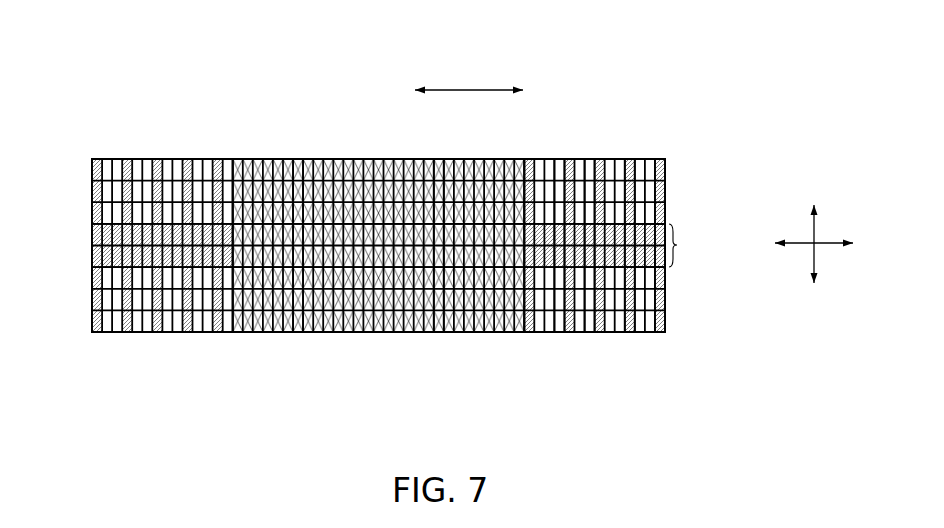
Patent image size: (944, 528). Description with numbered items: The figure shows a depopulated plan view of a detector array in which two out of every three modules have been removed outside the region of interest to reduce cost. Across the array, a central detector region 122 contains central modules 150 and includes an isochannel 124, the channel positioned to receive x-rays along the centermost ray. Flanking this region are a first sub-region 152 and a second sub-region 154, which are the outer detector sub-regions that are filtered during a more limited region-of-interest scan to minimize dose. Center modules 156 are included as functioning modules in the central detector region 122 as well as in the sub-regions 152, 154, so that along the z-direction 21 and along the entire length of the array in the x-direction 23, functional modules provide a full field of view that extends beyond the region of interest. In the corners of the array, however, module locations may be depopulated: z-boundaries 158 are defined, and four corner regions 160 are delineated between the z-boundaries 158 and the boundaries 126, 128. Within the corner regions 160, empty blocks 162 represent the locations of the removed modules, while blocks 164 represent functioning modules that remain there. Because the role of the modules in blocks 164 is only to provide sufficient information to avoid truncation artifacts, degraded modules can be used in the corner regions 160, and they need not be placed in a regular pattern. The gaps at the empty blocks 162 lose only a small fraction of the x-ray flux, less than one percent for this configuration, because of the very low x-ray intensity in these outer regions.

The z-direction 21 is at (815, 230).
The x-direction 23 is at (475, 89).
The central detector region 122 is at (390, 92).
The isochannel 124 is at (379, 333).
The boundary 126 is at (235, 335).
The boundary 128 is at (523, 335).
The central modules 150 is at (297, 333).
The first sub-region 152 is at (213, 128).
The second sub-region 154 is at (600, 127).
The center modules 156 is at (404, 245).
The z-boundaries 158 is at (683, 222).
The corner regions 160 is at (128, 147).
The empty blocks 162 is at (558, 158).
The blocks 164 is at (632, 157).